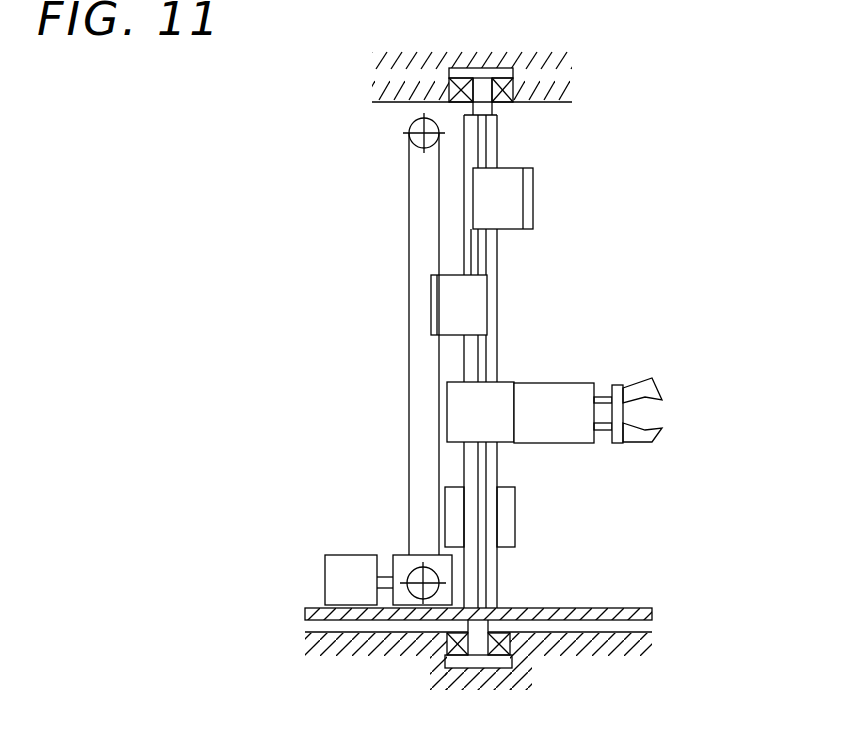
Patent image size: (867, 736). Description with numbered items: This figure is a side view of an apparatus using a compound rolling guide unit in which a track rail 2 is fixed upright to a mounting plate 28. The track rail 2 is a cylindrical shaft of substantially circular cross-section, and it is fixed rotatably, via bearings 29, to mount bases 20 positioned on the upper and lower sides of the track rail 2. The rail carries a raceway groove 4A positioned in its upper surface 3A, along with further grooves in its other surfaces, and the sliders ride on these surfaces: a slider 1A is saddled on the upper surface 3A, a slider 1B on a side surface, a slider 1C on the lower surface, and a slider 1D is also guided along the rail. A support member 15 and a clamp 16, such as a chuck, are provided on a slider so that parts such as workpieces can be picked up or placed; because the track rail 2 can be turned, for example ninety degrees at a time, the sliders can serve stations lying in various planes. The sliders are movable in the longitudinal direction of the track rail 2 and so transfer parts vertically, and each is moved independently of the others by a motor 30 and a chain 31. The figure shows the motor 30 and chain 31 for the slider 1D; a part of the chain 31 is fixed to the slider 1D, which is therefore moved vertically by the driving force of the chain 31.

The track rail 2 is at (500, 145).
The slider 1A is at (495, 410).
The slider 1B is at (515, 205).
The slider 1C is at (503, 520).
The slider 1D is at (475, 307).
The upper surface 3A is at (487, 472).
The raceway groove 4A is at (482, 253).
The support member 15 is at (560, 420).
The clamp 16 is at (617, 398).
The mount base 20 is at (428, 83).
The mounting plate 28 is at (617, 612).
The bearing 29 is at (500, 100).
The motor 30 is at (403, 570).
The chain 31 is at (408, 368).